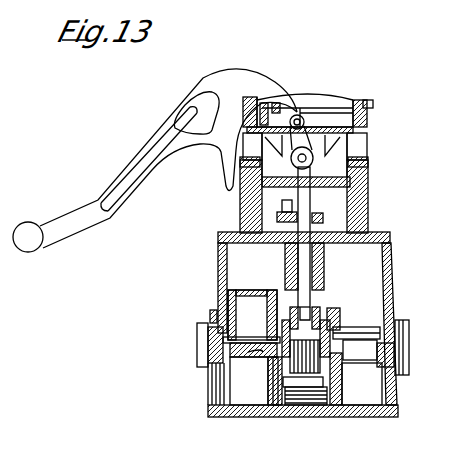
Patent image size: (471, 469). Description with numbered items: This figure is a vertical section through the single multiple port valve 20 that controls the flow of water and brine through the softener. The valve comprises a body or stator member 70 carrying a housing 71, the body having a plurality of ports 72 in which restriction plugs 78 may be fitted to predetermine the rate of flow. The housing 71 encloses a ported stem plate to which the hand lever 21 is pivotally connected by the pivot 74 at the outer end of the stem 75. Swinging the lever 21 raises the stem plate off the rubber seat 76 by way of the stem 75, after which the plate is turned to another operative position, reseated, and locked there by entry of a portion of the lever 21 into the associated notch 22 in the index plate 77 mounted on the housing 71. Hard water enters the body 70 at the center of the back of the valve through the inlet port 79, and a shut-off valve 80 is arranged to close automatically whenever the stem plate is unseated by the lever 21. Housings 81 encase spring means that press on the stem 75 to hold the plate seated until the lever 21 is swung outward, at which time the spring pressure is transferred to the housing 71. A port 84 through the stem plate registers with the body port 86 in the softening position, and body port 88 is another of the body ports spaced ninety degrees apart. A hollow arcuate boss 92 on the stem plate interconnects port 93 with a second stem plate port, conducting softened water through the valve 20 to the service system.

The multiple port valve 20 is at (391, 271).
The hand lever 21 is at (125, 197).
The notch 22 is at (373, 103).
The body or stator member 70 is at (250, 413).
The housing 71 is at (218, 270).
The ports 72 is at (218, 387).
The pivot 74 is at (306, 158).
The stem 75 is at (303, 302).
The rubber seat 76 is at (223, 345).
The index plate 77 is at (357, 98).
The restriction plugs 78 is at (254, 382).
The inlet port 79 is at (307, 412).
The shut-off valve 80 is at (318, 382).
The housings 81 is at (362, 142).
The port 84 is at (362, 353).
The port 86 is at (367, 335).
The port 88 is at (267, 283).
The hollow arcuate boss 92 is at (218, 296).
The port 93 is at (248, 352).